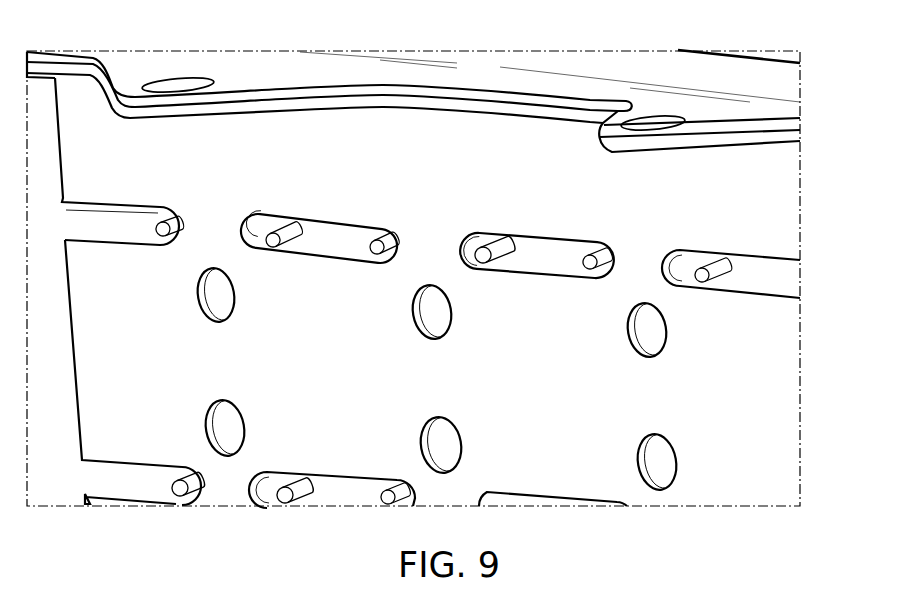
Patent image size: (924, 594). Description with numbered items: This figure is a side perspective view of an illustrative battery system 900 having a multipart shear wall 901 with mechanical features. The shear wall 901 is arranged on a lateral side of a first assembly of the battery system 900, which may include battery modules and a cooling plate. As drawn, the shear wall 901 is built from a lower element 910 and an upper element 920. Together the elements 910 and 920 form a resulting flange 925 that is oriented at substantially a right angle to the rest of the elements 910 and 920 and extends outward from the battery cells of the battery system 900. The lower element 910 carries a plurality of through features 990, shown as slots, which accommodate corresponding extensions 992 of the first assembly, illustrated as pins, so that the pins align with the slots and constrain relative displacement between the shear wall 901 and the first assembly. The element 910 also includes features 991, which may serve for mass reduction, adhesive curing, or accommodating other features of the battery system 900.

The battery system 900 is at (467, 40).
The multipart shear wall 901 is at (152, 386).
The element 910 is at (795, 200).
The element 920 is at (795, 74).
The resulting flange 925 is at (807, 100).
The features 990 is at (757, 268).
The features 991 is at (668, 345).
The extensions 992 is at (725, 283).